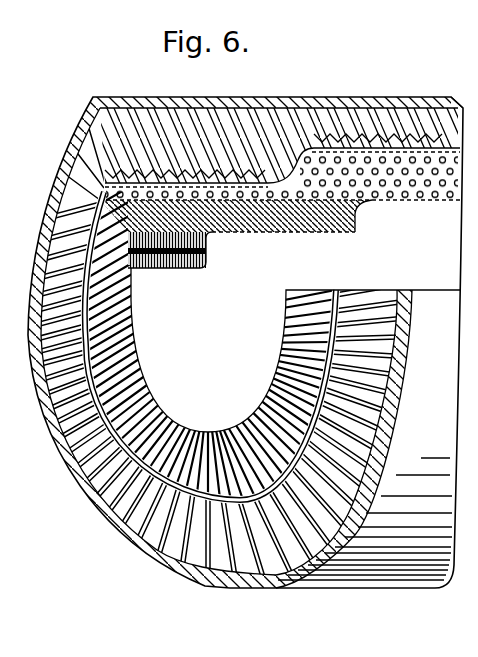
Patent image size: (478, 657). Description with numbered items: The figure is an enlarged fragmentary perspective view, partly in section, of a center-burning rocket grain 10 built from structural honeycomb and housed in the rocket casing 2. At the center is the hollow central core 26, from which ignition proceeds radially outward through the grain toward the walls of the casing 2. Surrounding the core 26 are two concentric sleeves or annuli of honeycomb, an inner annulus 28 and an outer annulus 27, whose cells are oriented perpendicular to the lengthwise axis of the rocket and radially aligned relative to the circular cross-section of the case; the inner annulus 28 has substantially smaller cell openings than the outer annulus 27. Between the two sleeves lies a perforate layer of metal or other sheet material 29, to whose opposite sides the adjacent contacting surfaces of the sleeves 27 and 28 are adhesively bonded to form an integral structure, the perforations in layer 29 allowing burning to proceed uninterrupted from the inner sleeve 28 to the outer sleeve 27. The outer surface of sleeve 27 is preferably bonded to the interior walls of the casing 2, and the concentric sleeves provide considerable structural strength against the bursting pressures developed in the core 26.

The rocket casing 2 is at (381, 582).
The rocket grain 10 is at (222, 121).
The hollow central core 26 is at (232, 308).
The outer annulus of honeycomb 27 is at (92, 460).
The inner annulus of honeycomb 28 is at (133, 383).
The perforate layer of sheet material 29 is at (380, 180).